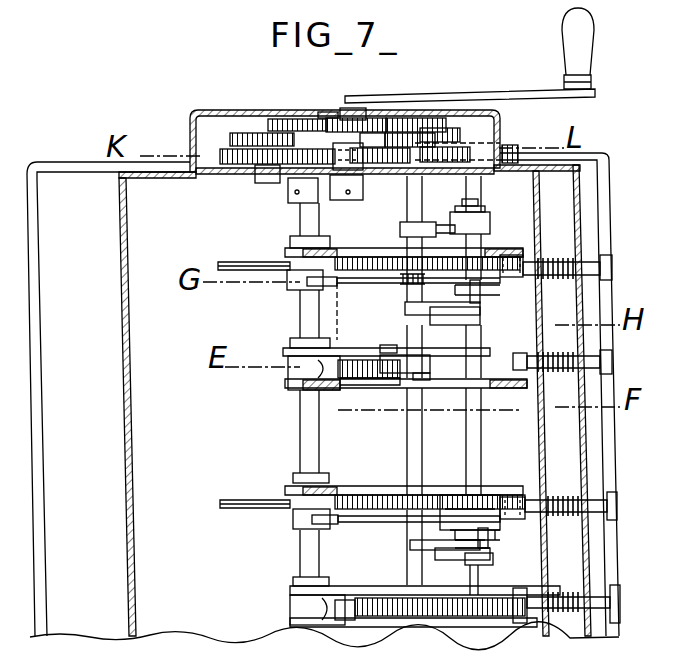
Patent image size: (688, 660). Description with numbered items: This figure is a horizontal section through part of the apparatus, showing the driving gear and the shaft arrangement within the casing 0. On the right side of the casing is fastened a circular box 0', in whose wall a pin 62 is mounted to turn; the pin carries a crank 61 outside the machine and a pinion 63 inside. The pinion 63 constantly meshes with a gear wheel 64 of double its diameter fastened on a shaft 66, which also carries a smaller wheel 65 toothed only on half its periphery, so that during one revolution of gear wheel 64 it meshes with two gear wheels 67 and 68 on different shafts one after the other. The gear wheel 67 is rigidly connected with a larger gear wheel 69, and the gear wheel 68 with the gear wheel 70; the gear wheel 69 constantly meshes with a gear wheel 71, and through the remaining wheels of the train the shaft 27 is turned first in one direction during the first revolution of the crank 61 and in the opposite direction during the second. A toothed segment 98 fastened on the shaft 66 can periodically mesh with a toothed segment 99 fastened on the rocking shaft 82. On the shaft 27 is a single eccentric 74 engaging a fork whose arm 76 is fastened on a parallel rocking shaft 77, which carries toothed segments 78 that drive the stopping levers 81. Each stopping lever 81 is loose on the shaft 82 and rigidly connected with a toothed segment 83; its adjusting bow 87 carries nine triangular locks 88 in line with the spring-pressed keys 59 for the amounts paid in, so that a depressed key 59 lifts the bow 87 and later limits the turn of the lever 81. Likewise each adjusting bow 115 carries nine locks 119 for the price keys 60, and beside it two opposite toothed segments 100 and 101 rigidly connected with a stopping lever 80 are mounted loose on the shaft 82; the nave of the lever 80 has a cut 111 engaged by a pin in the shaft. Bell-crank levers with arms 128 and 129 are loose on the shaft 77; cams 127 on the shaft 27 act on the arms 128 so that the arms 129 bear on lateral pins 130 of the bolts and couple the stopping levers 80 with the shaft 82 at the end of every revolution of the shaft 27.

The casing 0 is at (323, 401).
The circular box 0' is at (345, 112).
The crank 61 is at (474, 94).
The gear wheel 69 is at (236, 152).
The gear wheel 67 is at (243, 134).
The gear wheel 64 is at (296, 121).
The pinion 63 is at (330, 116).
The pin 62 is at (348, 108).
The wheel 65 is at (375, 118).
The gear wheel 71 is at (388, 133).
The shaft 66 is at (355, 160).
The gear wheel 68 is at (462, 132).
The gear wheel 70 is at (472, 150).
The toothed segment 99 is at (308, 198).
The toothed segment 98 is at (338, 200).
The horizontal shaft 82 is at (305, 433).
The horizontal shaft 77 is at (418, 428).
The fork 76 is at (437, 224).
The shaft 27 is at (478, 428).
The eccentric 74 is at (482, 218).
The toothed segment 101 is at (352, 246).
The toothed segment 100 is at (238, 264).
The adjusting bow 115 is at (390, 258).
The cut 111 is at (300, 290).
The stopping lever 80 is at (366, 284).
The lock 119 is at (514, 278).
The lateral pin 130 is at (486, 297).
The key 60 is at (588, 264).
The arm of bell-crank lever 129 is at (416, 309).
The stopping lever 81 is at (335, 358).
The toothed segment 83 is at (372, 358).
The toothed segment 78 is at (408, 360).
The lock 88 is at (520, 354).
The key 59 is at (592, 372).
The adjusting bow 87 is at (452, 388).
The arm of bell-crank lever 128 is at (455, 552).
The cam 127 is at (475, 567).